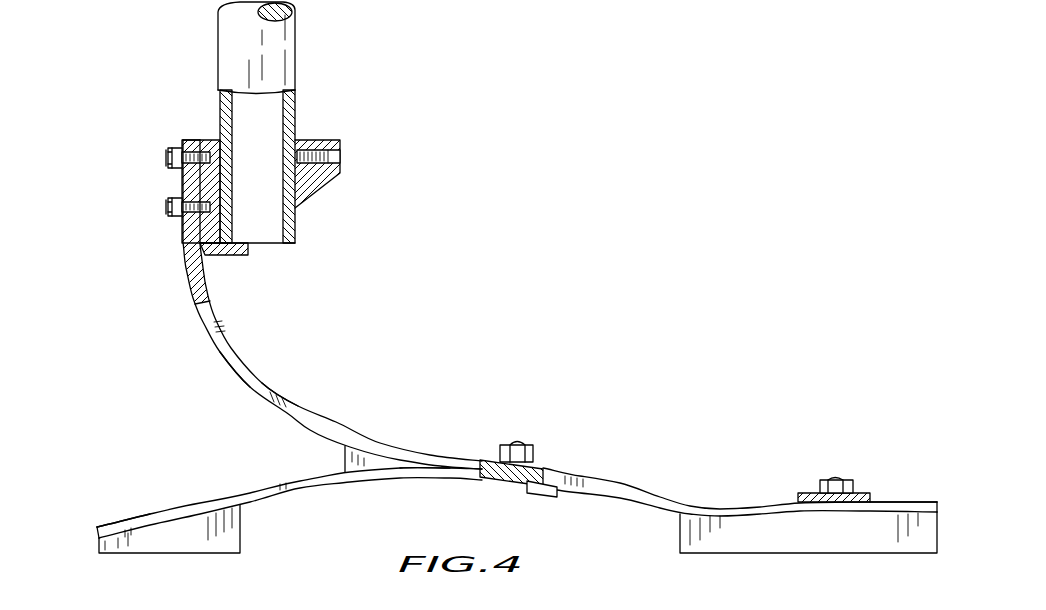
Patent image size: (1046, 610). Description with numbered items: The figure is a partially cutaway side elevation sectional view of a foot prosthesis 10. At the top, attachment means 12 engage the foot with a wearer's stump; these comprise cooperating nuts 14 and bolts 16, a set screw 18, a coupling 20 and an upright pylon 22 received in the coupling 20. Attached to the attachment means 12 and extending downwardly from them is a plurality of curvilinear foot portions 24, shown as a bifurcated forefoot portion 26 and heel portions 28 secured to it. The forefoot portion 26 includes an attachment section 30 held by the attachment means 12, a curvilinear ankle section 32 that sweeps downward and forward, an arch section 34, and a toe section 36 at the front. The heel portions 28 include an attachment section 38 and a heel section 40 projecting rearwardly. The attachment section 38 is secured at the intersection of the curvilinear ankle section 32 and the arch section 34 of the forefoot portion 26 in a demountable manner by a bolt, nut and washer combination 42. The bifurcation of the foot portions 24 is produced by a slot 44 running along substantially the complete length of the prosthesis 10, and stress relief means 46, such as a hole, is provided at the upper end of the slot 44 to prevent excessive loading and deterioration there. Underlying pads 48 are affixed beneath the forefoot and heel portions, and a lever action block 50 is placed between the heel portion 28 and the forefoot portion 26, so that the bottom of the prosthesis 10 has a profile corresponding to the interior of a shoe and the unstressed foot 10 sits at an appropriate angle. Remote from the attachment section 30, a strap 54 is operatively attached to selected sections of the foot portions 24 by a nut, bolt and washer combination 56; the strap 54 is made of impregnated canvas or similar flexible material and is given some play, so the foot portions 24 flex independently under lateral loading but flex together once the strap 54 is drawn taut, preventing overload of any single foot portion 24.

The foot prosthesis 10 is at (373, 410).
The attachment means 12 is at (323, 193).
The nuts 14 is at (181, 146).
The bolts 16 is at (168, 205).
The set screw 18 is at (332, 160).
The coupling 20 is at (323, 140).
The pylon 22 is at (285, 63).
The curvilinear foot portions 24 is at (300, 304).
The forefoot portion 26 is at (237, 350).
The heel portions 28 is at (517, 461).
The attachment section 30 is at (188, 278).
The curvilinear ankle section 32 is at (228, 365).
The arch section 34 is at (435, 447).
The toe section 36 is at (897, 500).
The attachment section 38 is at (460, 478).
The heel section 40 is at (190, 498).
The bolt, nut and washer combinations 42 is at (527, 448).
The slot 44 is at (308, 413).
The stress relief means 46 is at (217, 328).
The pads 48 is at (170, 555).
The lever action blocks 50 is at (347, 457).
The strap 54 is at (798, 492).
The nut, bolt and washer combinations 56 is at (850, 478).